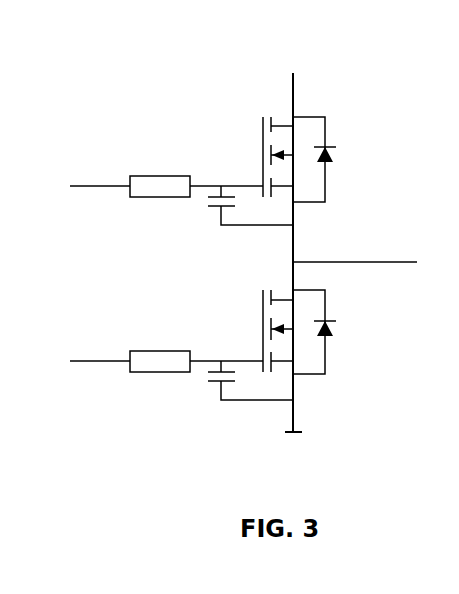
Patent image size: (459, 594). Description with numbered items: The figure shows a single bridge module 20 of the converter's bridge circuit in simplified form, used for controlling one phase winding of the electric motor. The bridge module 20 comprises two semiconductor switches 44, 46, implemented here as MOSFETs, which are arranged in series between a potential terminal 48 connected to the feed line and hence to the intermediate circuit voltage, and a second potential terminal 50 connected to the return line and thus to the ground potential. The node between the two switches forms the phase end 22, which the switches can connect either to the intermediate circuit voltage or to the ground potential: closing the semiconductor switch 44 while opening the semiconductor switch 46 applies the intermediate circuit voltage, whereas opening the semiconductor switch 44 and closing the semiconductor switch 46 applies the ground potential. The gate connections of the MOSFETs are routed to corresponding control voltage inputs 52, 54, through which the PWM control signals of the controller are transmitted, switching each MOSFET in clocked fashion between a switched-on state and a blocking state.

The bridge module 20 is at (151, 93).
The phase end 22 is at (352, 262).
The semiconductor switch 44 is at (326, 130).
The semiconductor switch 46 is at (327, 353).
The potential terminal 48 is at (293, 83).
The second potential terminal 50 is at (298, 432).
The control voltage input 52 is at (93, 187).
The control voltage input 54 is at (95, 362).